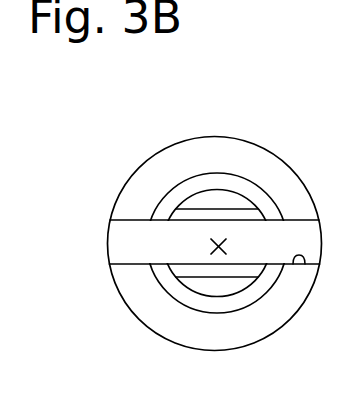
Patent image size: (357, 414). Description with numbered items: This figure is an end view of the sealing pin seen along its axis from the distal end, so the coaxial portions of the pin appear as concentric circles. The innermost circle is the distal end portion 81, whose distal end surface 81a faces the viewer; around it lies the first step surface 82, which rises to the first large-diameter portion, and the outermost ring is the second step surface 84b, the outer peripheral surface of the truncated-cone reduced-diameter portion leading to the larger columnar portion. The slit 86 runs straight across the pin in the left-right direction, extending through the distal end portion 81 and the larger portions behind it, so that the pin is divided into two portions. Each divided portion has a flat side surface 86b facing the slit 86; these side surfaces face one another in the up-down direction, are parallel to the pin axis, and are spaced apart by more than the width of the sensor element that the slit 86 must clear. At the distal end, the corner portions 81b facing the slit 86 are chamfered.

The distal end portion 81 is at (216, 197).
The distal end surface 81a is at (215, 198).
The corner portions 81b is at (235, 216).
The first step surface 82 is at (175, 200).
The second step surface 84b is at (138, 198).
The slit 86 is at (219, 253).
The side surfaces 86b is at (288, 220).